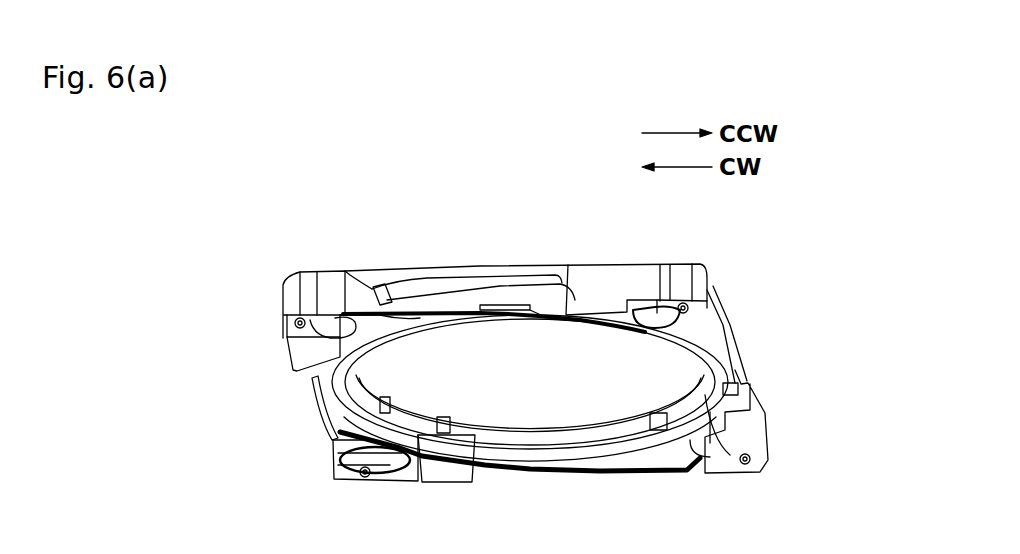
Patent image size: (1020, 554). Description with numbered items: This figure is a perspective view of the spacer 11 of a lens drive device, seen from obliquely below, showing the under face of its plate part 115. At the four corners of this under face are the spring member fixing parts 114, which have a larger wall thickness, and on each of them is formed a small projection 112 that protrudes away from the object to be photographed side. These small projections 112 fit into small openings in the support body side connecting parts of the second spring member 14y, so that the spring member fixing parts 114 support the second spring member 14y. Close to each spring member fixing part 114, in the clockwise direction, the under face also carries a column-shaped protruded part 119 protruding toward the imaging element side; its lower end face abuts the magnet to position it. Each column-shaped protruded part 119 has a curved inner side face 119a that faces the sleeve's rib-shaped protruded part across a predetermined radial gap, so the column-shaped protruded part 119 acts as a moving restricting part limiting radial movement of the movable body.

The spacer 11 is at (333, 270).
The plate part 115 is at (428, 292).
The second spring member 14y is at (507, 298).
The spring member fixing part 114 is at (287, 282).
The small projection 112 is at (698, 305).
The column-shaped protruded part 119 is at (602, 312).
The inner side face 119a is at (584, 312).